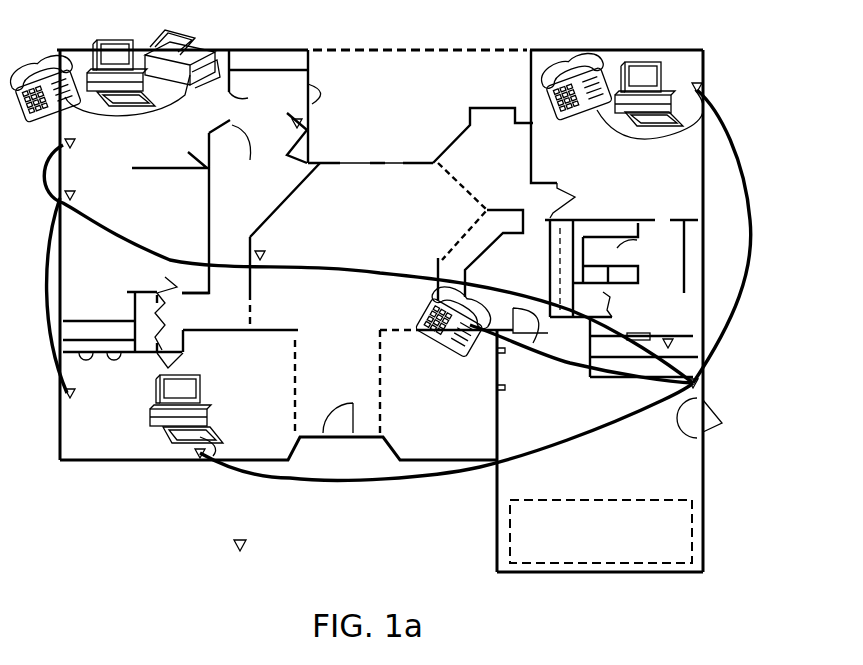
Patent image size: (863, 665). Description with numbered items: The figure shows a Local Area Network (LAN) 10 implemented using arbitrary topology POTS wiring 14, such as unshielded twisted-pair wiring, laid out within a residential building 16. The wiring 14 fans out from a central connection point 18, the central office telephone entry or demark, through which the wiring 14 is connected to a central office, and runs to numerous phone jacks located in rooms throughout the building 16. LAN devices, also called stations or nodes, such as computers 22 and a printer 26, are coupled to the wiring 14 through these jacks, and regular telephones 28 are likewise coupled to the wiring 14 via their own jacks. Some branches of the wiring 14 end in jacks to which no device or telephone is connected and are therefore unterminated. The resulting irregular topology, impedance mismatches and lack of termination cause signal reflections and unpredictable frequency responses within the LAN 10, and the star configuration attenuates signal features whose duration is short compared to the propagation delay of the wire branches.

The Local Area Network (LAN) 10 is at (104, 552).
The arbitrary topology POTS wiring 14 is at (50, 347).
The residential building 16 is at (708, 530).
The central connection point 18 is at (708, 447).
The computer 22 is at (200, 392).
The printer 26 is at (177, 33).
The regular telephone 28 is at (440, 347).